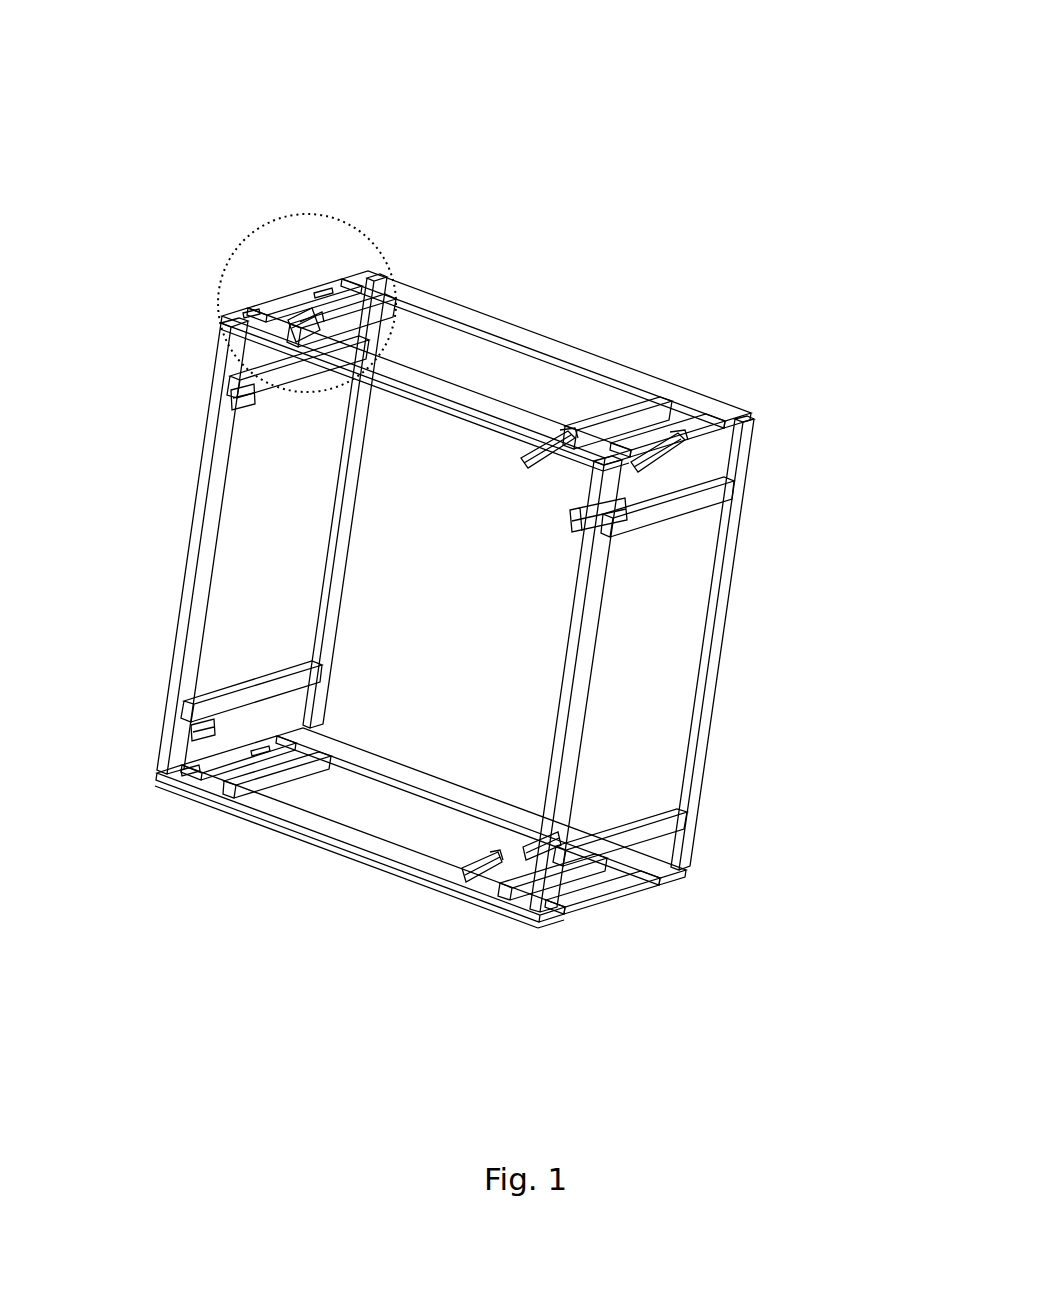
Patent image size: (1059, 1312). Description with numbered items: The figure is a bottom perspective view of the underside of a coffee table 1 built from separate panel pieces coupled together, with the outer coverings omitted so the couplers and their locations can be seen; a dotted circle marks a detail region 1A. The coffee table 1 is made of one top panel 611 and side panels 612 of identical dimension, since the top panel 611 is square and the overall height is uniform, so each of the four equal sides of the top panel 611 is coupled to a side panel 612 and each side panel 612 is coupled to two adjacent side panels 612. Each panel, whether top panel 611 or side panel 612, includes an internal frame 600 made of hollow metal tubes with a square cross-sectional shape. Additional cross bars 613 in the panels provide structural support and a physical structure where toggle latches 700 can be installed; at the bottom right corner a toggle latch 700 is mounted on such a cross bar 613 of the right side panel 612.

The coffee table 1 is at (651, 142).
The detail region 1A is at (342, 220).
The internal frame 600 is at (458, 318).
The top panel 611 is at (207, 412).
The side panel 612 is at (540, 345).
The cross bar 613 is at (614, 413).
The toggle latch 700 is at (690, 433).